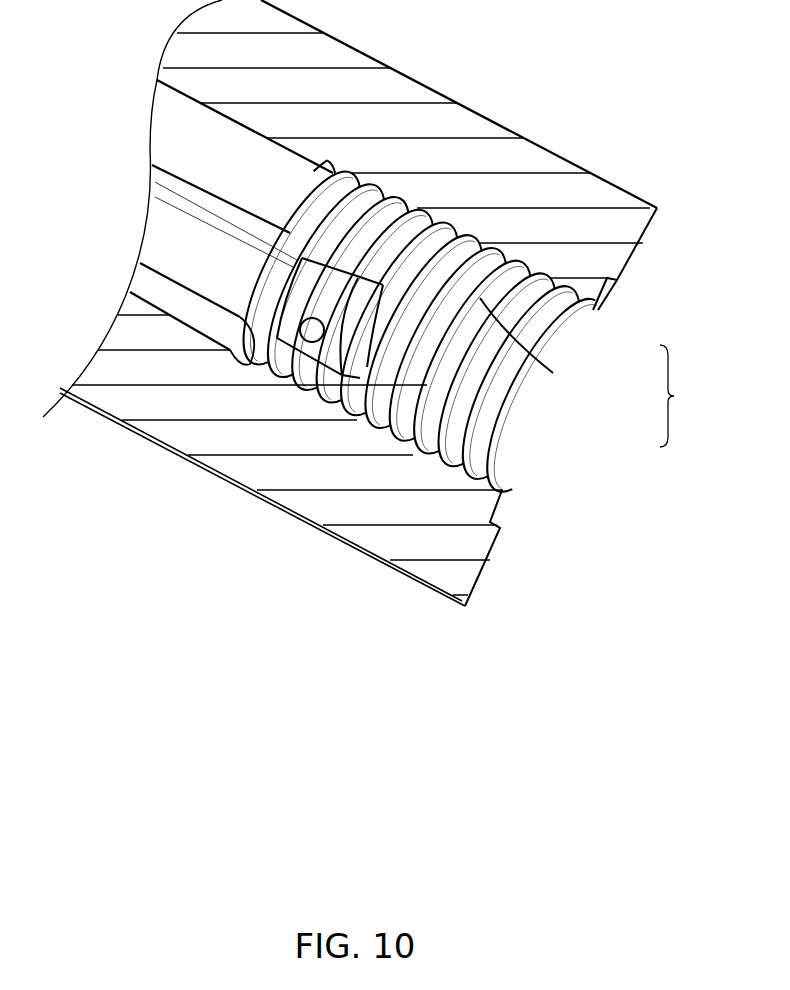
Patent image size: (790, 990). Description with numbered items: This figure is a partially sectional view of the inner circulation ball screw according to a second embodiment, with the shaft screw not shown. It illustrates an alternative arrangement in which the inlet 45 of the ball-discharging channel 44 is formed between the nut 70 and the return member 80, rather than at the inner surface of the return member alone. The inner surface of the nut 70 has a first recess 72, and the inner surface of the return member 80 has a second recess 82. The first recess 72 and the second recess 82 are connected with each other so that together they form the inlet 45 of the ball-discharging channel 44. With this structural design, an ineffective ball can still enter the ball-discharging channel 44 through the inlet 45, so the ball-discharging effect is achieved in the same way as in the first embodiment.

The nut 70 is at (551, 130).
The return member 80 is at (280, 295).
The ball-discharging channel 44 is at (447, 314).
The first recess 72 is at (483, 298).
The second recess 82 is at (465, 395).
The inlet 45 is at (687, 396).